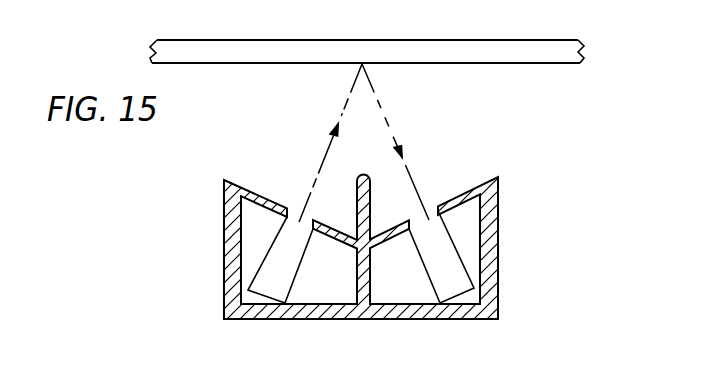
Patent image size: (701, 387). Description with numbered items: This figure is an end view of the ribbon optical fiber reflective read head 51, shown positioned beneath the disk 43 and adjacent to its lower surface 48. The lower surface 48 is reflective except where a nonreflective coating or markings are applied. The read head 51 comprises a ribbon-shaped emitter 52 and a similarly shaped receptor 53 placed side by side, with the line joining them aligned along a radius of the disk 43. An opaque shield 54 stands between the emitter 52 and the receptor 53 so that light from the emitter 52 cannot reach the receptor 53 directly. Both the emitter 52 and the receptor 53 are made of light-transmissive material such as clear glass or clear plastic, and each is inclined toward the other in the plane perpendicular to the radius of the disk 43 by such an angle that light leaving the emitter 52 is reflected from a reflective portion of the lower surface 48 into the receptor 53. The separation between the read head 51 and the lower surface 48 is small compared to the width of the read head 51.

The disk 43 is at (468, 49).
The lower surface 48 is at (488, 63).
The fiber optic read head 51 is at (200, 278).
The ribbon-shaped emitter 52 is at (280, 245).
The receptor 53 is at (445, 251).
The opaque shield 54 is at (360, 282).